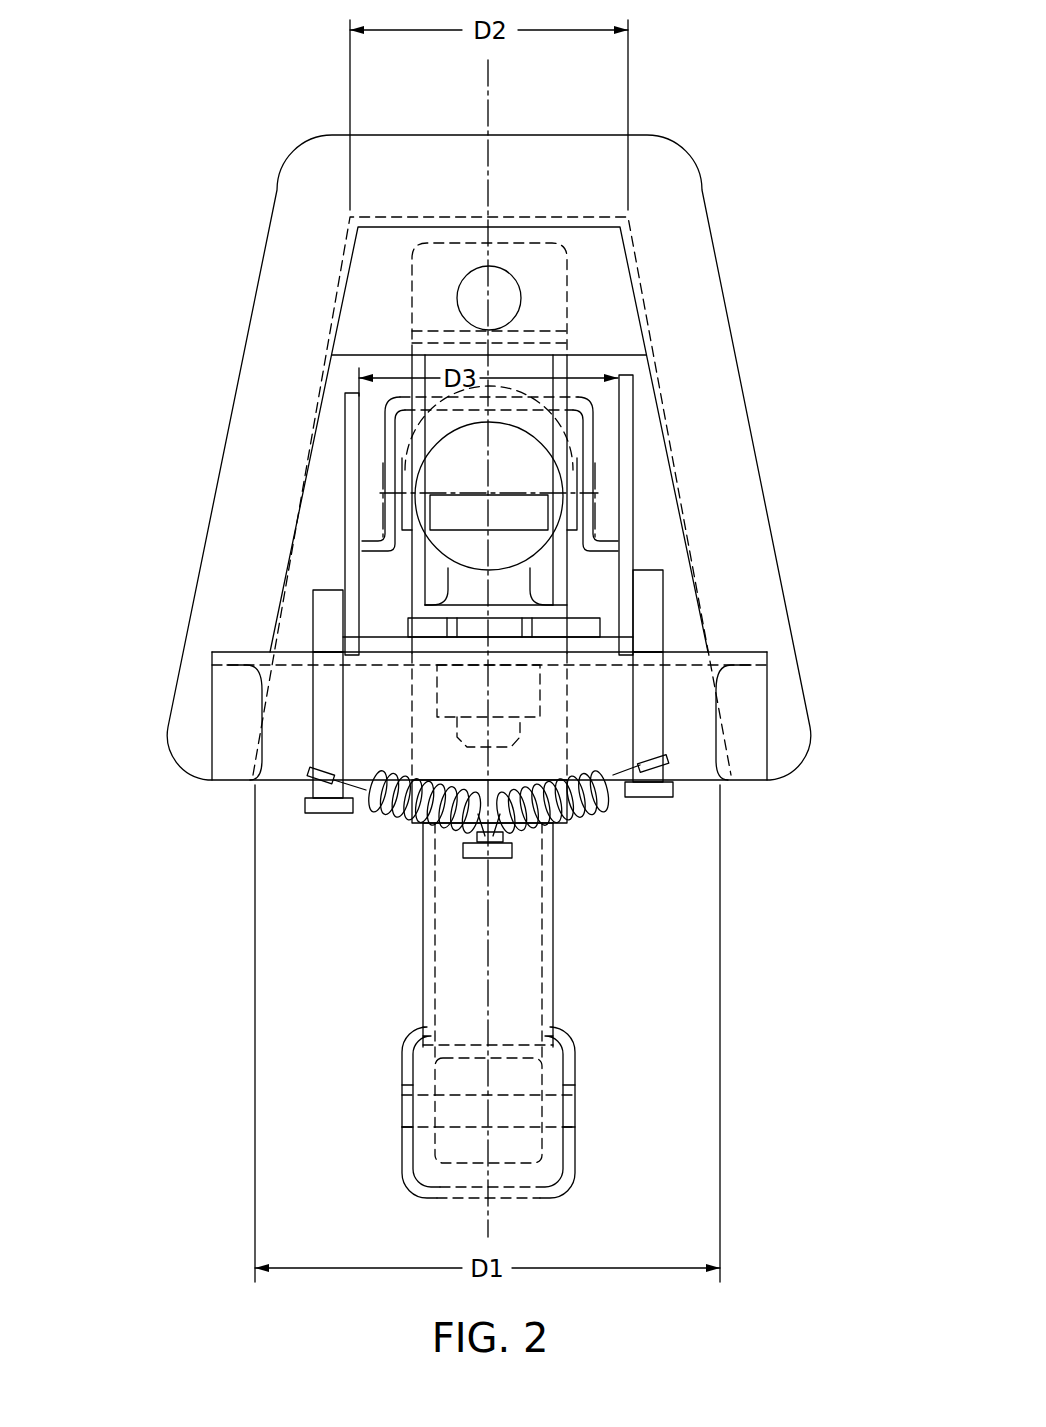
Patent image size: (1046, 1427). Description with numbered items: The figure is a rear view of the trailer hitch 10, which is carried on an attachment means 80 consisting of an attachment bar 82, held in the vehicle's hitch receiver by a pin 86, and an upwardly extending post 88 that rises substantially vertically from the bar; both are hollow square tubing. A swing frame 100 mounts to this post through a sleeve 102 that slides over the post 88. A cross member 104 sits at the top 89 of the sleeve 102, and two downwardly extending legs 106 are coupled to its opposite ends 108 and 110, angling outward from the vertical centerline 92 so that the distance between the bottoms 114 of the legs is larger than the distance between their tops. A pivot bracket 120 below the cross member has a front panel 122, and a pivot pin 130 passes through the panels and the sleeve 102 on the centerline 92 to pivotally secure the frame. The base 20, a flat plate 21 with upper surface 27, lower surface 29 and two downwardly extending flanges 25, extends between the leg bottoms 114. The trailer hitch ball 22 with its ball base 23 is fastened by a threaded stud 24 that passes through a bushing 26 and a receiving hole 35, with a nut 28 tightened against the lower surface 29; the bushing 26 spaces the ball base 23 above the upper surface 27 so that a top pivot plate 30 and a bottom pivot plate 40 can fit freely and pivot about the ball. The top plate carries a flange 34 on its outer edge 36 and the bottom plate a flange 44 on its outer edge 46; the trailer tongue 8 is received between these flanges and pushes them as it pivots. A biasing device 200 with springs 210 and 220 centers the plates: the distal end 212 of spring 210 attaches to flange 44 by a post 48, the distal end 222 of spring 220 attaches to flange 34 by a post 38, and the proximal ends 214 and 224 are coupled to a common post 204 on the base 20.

The trailer hitch 10 is at (137, 178).
The swing frame 100 is at (838, 262).
The downwardly extending legs 106 is at (265, 368).
The cross member 104 is at (512, 138).
The end of cross member 108 is at (678, 158).
The end of cross member 110 is at (305, 163).
The front panel 122 is at (609, 262).
The pivot bracket 120 is at (383, 245).
The top of sleeve 89 is at (425, 245).
The pivot pin 130 is at (468, 295).
The vertical centerline 92 is at (492, 72).
The sleeve 102 is at (560, 367).
The trailer tongue 8 is at (593, 432).
The trailer hitch ball 22 is at (539, 472).
The flange 44 is at (348, 500).
The flange 34 is at (628, 485).
The ball base 23 is at (547, 607).
The top pivot plate 30 is at (583, 627).
The bushing 26 is at (455, 620).
The bottom pivot plate 40 is at (397, 643).
The outer edge 46 is at (363, 643).
The outer edge 36 is at (640, 622).
The post 48 is at (312, 757).
The post 38 is at (663, 737).
The flat plate 21 is at (770, 667).
The upper surface 27 is at (727, 653).
The lower surface 29 is at (727, 668).
The base 20 is at (225, 735).
The downwardly extending flanges 25 is at (757, 745).
The bottoms of downwardly extending legs 114 is at (195, 767).
The receiving hole 35 is at (443, 657).
The nut 28 is at (545, 685).
The threaded stud 24 is at (522, 736).
The distal end of spring 212 is at (322, 800).
The distal end of spring 222 is at (655, 772).
The proximal end of spring 224 is at (470, 779).
The spring 210 is at (390, 832).
The spring 220 is at (590, 815).
The proximal end of spring 214 is at (510, 850).
The post 204 is at (477, 848).
The biasing device 200 is at (650, 865).
The upwardly extending post 88 is at (543, 995).
The attachment bar 82 is at (567, 1187).
The pin 86 is at (453, 1120).
The attachment means 80 is at (627, 1073).